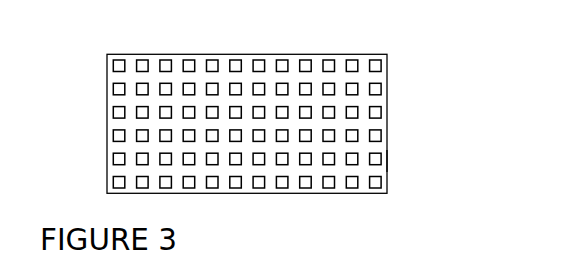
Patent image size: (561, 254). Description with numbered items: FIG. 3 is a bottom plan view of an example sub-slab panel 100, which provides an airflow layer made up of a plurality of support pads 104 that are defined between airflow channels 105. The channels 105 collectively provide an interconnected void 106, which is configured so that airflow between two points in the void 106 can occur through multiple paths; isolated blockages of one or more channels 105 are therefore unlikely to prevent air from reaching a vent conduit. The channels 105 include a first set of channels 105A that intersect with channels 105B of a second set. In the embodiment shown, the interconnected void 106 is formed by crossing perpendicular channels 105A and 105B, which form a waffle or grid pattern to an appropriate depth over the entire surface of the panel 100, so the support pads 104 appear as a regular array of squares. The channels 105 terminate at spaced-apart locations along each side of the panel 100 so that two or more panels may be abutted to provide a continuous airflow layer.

The sub-slab panel 100 is at (296, 55).
The support pads 104 is at (350, 87).
The airflow channels 105 is at (350, 122).
The interconnected void 106 is at (339, 163).
The first set of channels 105A is at (328, 191).
The second set of channels 105B is at (386, 161).